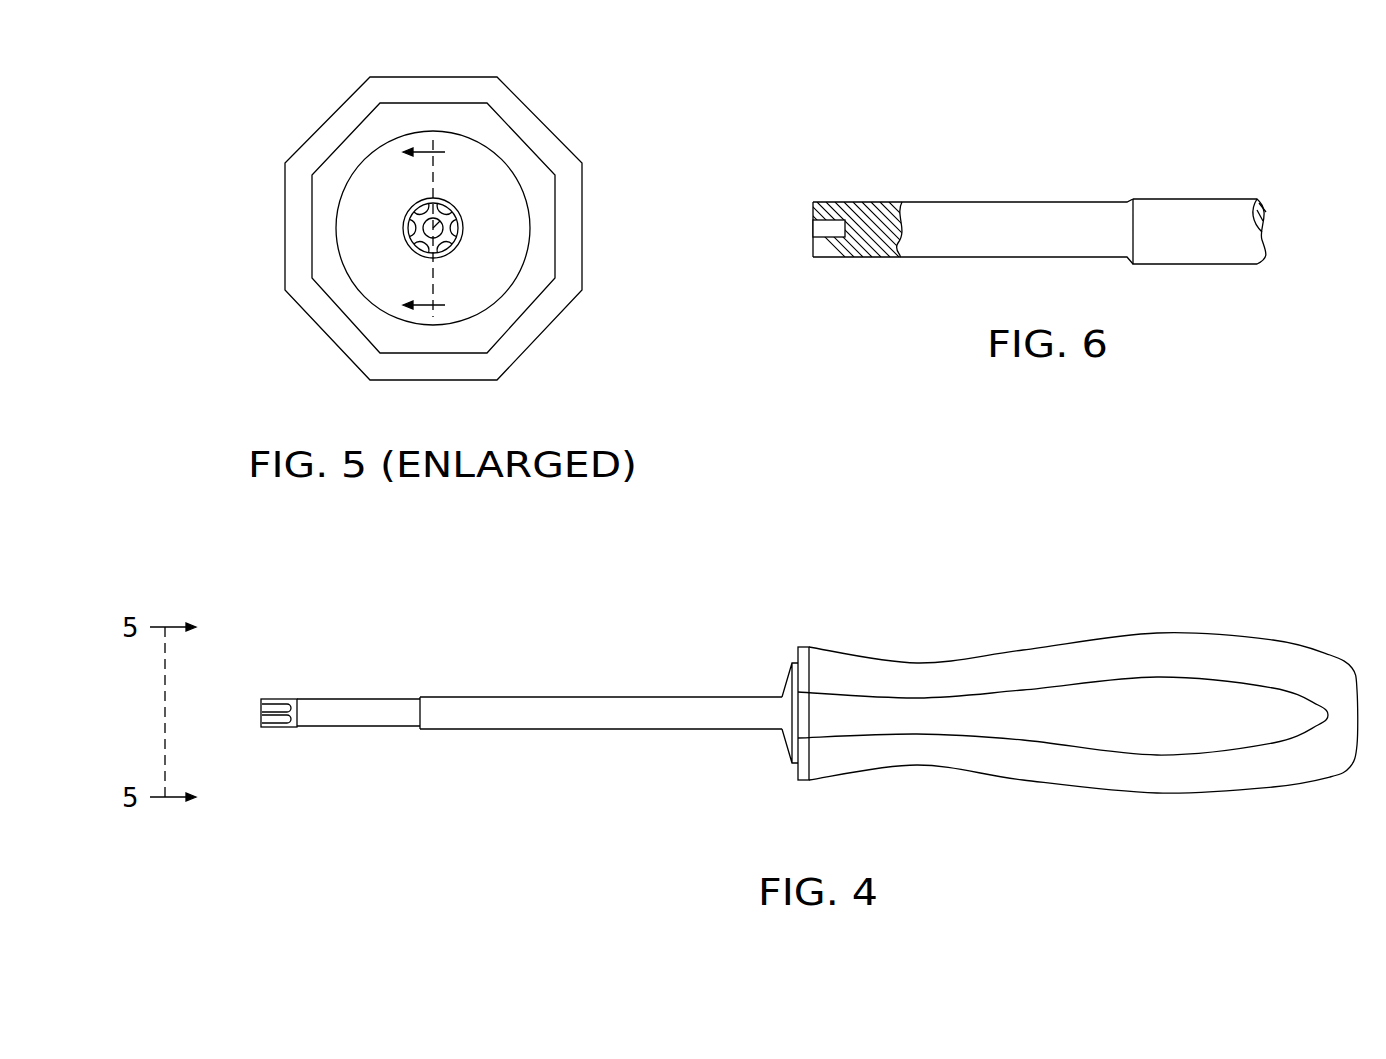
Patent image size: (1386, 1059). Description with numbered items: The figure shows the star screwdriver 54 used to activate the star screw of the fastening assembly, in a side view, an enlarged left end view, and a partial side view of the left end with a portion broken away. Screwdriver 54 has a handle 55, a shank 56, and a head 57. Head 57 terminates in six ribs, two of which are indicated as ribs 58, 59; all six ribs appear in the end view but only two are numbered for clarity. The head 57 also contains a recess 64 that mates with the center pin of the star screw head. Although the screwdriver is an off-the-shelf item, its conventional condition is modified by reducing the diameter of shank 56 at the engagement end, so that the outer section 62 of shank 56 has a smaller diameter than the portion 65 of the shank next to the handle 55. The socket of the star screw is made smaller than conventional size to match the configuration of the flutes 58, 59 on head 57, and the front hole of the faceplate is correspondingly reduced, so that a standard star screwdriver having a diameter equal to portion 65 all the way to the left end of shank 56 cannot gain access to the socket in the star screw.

In FIG. 5, the star screwdriver 54 is at (441, 209).
In FIG. 4, the star screwdriver 54 is at (791, 704).
In FIG. 5, the handle 55 is at (548, 326).
In FIG. 4, the handle 55 is at (1292, 766).
In FIG. 4, the shank 56 is at (503, 726).
In FIG. 4, the head 57 is at (291, 712).
In FIG. 5, the rib 58 is at (460, 218).
In FIG. 4, the rib 58 is at (270, 698).
In FIG. 5, the rib 59 is at (459, 242).
In FIG. 4, the rib 59 is at (272, 728).
In FIG. 5, the outer section 62 is at (464, 228).
In FIG. 6, the outer section 62 is at (948, 221).
In FIG. 4, the outer section 62 is at (377, 714).
In FIG. 5, the recess 64 is at (421, 246).
In FIG. 6, the recess 64 is at (813, 228).
In FIG. 5, the portion 65 is at (452, 204).
In FIG. 6, the portion 65 is at (1183, 223).
In FIG. 4, the portion 65 is at (550, 706).